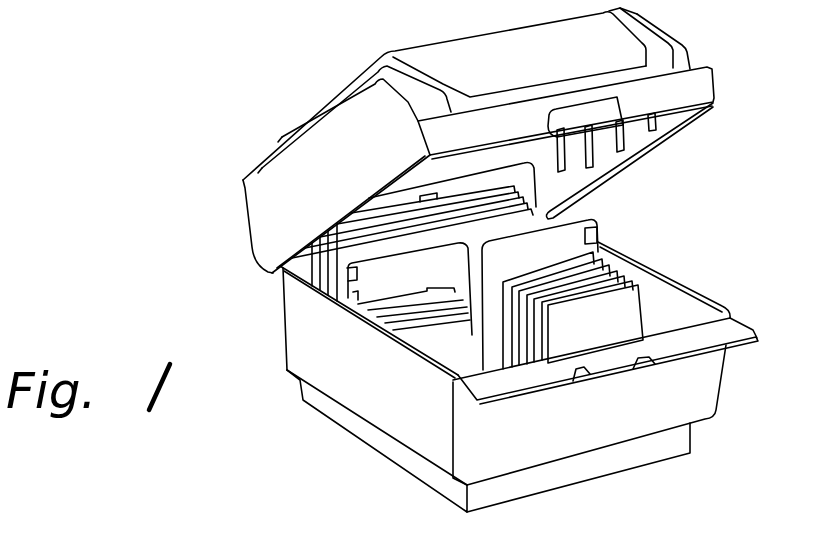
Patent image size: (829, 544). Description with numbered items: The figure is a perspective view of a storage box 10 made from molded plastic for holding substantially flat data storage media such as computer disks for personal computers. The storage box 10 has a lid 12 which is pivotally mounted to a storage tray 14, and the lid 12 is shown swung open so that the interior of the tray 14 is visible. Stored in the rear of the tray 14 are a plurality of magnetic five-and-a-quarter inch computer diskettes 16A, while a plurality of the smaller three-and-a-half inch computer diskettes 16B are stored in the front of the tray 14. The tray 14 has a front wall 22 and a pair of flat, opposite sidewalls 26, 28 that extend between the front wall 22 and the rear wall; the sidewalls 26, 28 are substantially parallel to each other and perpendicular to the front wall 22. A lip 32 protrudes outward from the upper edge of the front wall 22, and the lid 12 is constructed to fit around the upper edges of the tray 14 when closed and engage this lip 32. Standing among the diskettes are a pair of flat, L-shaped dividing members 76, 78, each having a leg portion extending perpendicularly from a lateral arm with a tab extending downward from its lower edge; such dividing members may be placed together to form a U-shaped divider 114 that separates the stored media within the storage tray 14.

The storage box 10 is at (713, 48).
The lid 12 is at (493, 60).
The storage tray 14 is at (328, 356).
The 5¼ inch computer diskettes 16A is at (565, 207).
The 3½ inch computer diskettes 16B is at (637, 300).
The front wall 22 is at (708, 396).
The sidewall 26 is at (402, 423).
The sidewall 28 is at (713, 312).
The lip 32 is at (518, 378).
The dividing member 76 is at (347, 289).
The dividing member 78 is at (573, 241).
The U-shaped divider 114 is at (520, 181).